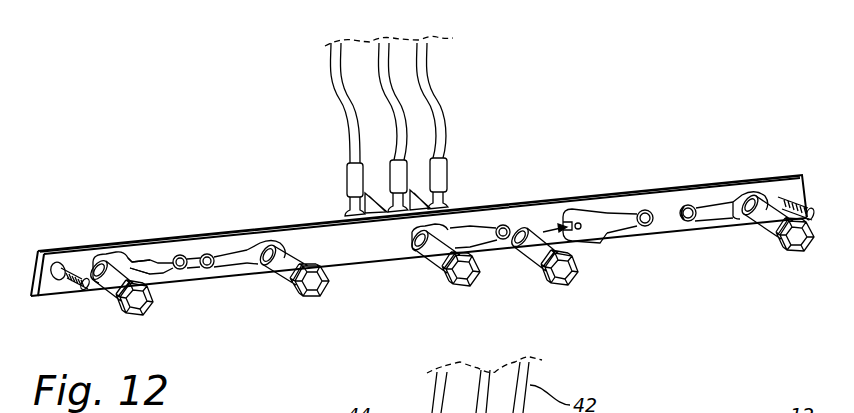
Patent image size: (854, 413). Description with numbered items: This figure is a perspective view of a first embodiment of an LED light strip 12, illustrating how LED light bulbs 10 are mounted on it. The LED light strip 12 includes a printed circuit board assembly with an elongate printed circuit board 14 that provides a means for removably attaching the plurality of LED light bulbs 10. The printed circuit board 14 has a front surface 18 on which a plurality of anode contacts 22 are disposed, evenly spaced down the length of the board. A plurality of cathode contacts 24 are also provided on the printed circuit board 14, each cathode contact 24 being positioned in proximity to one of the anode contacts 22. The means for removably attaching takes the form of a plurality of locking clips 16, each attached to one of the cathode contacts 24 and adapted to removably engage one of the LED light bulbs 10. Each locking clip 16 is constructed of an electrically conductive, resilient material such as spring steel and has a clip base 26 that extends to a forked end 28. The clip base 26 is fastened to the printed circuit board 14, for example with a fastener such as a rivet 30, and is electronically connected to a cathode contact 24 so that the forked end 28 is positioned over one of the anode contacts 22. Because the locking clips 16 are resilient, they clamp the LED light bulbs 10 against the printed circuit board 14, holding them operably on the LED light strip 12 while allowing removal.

The LED light bulb 10 is at (280, 282).
The LED light strip 12 is at (708, 150).
The printed circuit board 14 is at (645, 190).
The locking clip 16 is at (140, 258).
The front surface 18 is at (368, 260).
The anode contact 22 is at (578, 222).
The cathode contact 24 is at (182, 256).
The clip base 26 is at (162, 260).
The forked end 28 is at (116, 254).
The rivet 30 is at (207, 255).